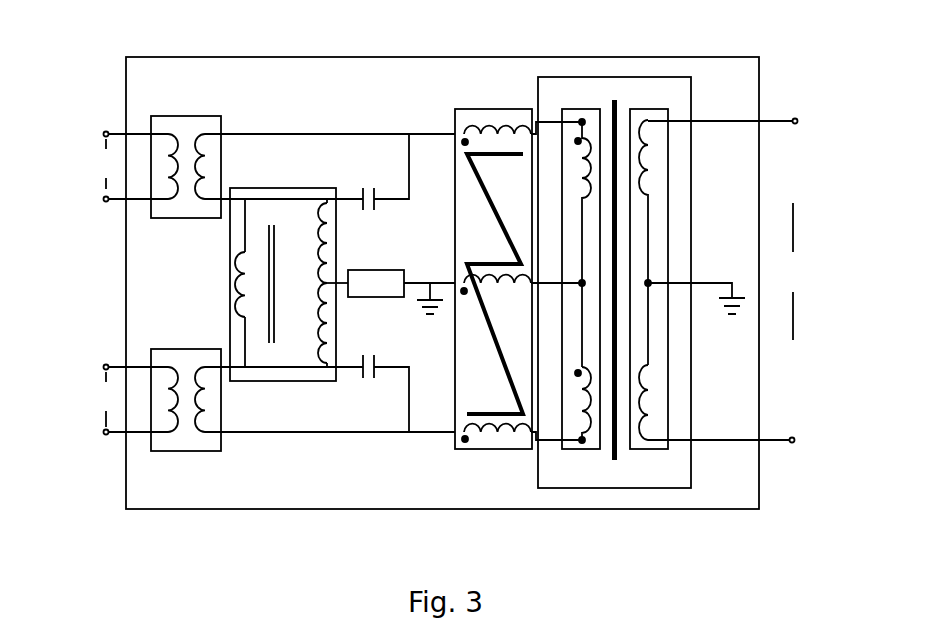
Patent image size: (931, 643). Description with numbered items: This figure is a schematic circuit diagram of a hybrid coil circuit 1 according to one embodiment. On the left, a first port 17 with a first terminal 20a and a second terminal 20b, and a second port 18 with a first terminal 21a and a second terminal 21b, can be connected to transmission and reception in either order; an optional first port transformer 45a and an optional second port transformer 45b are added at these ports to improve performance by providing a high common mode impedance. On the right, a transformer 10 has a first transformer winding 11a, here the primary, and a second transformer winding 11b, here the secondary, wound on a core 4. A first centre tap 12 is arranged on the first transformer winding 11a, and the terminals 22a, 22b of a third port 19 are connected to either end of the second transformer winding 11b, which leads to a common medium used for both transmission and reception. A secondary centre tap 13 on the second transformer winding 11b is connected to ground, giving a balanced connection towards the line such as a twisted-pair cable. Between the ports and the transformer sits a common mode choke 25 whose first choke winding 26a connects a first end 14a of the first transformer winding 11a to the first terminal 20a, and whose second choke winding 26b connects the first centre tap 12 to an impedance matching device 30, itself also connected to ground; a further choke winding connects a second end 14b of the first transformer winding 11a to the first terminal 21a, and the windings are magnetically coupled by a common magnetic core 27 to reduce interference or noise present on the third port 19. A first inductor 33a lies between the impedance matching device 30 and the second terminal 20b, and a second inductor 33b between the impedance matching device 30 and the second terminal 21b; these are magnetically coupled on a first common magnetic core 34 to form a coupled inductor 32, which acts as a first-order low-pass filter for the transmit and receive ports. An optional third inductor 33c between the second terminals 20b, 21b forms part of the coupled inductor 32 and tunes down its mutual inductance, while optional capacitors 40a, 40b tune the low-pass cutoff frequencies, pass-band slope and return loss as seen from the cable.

The hybrid coil circuit 1 is at (742, 55).
The transformer 10 is at (672, 77).
The transformer core 4 is at (617, 153).
The first transformer winding 11a is at (585, 443).
The second transformer winding 11b is at (653, 450).
The first centre tap 12 is at (578, 280).
The secondary centre tap 13 is at (651, 281).
The first end of the first transformer winding 14a is at (580, 121).
The second end of the first transformer winding 14b is at (582, 443).
The first port 17 is at (106, 164).
The second port 18 is at (105, 399).
The third port 19 is at (795, 271).
The first terminal of the first port 20a is at (106, 131).
The second terminal of the first port 20b is at (106, 202).
The first terminal of the second port 21a is at (106, 435).
The second terminal of the second port 21b is at (106, 364).
The terminal of the third port 22a is at (800, 121).
The terminal of the third port 22b is at (825, 425).
The common mode choke 25 is at (510, 108).
The first choke winding 26a is at (488, 124).
The second choke winding 26b is at (490, 262).
The common magnetic core 27 is at (493, 343).
The impedance matching device 30 is at (358, 298).
The coupled inductor 32 is at (245, 383).
The first inductor 33a is at (320, 205).
The second inductor 33b is at (320, 350).
The third inductor 33c is at (235, 274).
The first common magnetic core 34 is at (277, 293).
The capacitor 40a is at (360, 192).
The capacitor 40b is at (375, 378).
The first port transformer 45a is at (186, 116).
The second port transformer 45b is at (187, 452).